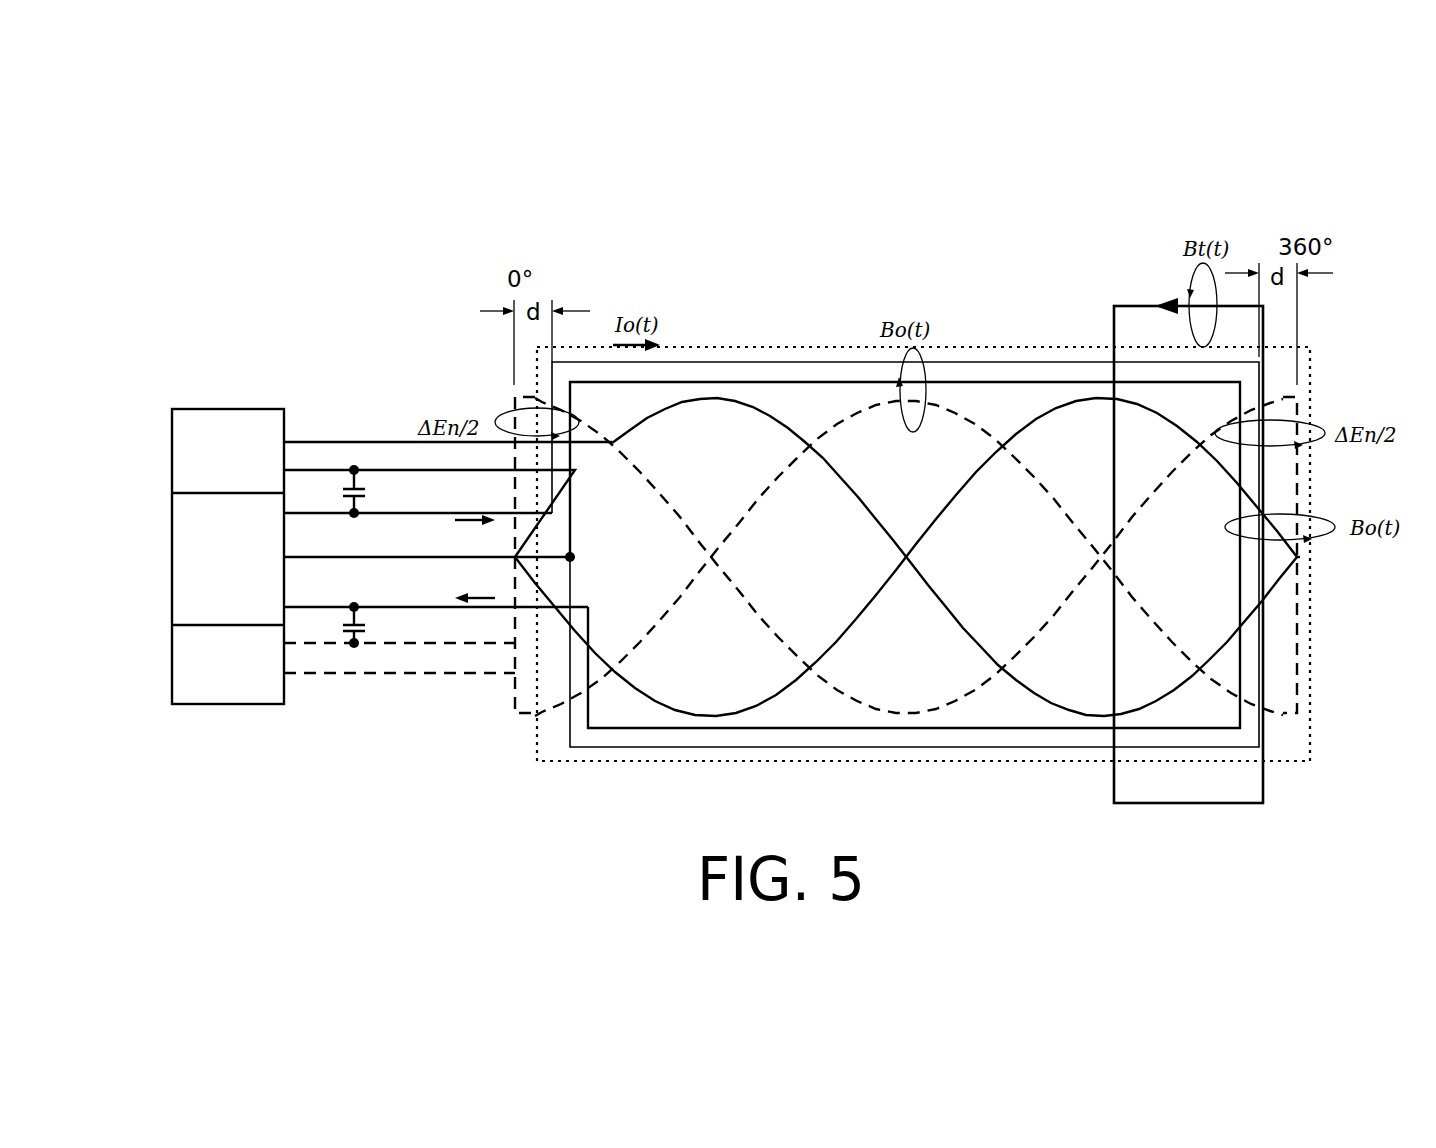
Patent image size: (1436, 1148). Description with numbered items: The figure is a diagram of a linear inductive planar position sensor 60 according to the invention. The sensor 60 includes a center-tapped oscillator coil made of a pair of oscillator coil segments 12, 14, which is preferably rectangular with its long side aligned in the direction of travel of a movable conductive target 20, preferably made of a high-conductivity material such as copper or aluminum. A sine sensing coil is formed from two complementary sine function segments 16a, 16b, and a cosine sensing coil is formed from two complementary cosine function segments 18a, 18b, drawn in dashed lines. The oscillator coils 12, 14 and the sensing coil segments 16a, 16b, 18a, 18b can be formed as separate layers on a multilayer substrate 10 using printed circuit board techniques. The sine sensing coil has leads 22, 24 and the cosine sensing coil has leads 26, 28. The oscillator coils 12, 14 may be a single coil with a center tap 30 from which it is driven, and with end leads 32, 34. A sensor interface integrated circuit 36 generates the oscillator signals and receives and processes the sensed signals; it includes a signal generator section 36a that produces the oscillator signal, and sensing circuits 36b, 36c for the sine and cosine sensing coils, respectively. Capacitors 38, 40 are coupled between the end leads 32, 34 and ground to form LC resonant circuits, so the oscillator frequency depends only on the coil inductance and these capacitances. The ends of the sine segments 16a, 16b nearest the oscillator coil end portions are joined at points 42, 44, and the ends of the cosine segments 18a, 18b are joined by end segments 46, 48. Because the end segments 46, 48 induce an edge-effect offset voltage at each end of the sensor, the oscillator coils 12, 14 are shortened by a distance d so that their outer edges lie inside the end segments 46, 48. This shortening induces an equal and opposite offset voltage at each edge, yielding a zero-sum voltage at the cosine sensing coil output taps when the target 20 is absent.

The multilayer substrate 10 is at (632, 762).
The oscillator coil segment 12 is at (697, 363).
The oscillator coil segment 14 is at (745, 730).
The sine function segment 16a is at (715, 400).
The sine function segment 16b is at (708, 713).
The cosine function segment 18a is at (935, 410).
The cosine function segment 18b is at (908, 706).
The movable conductive target 20 is at (1263, 775).
The lead 22 is at (448, 432).
The lead 24 is at (429, 501).
The lead 26 is at (399, 629).
The lead 28 is at (399, 661).
The center tap 30 is at (427, 538).
The end lead 32 is at (418, 501).
The end lead 34 is at (436, 593).
The sensor interface integrated circuit 36 is at (228, 599).
The signal generator section 36a is at (228, 558).
The sensing circuit 36b is at (229, 447).
The sensing circuit 36c is at (227, 656).
The capacitor 38 is at (366, 491).
The capacitor 40 is at (366, 635).
The point 42 is at (517, 555).
The point 44 is at (1298, 555).
The end segment 46 is at (515, 447).
The end segment 48 is at (1298, 633).
The linear inductive planar position sensor 60 is at (1268, 152).